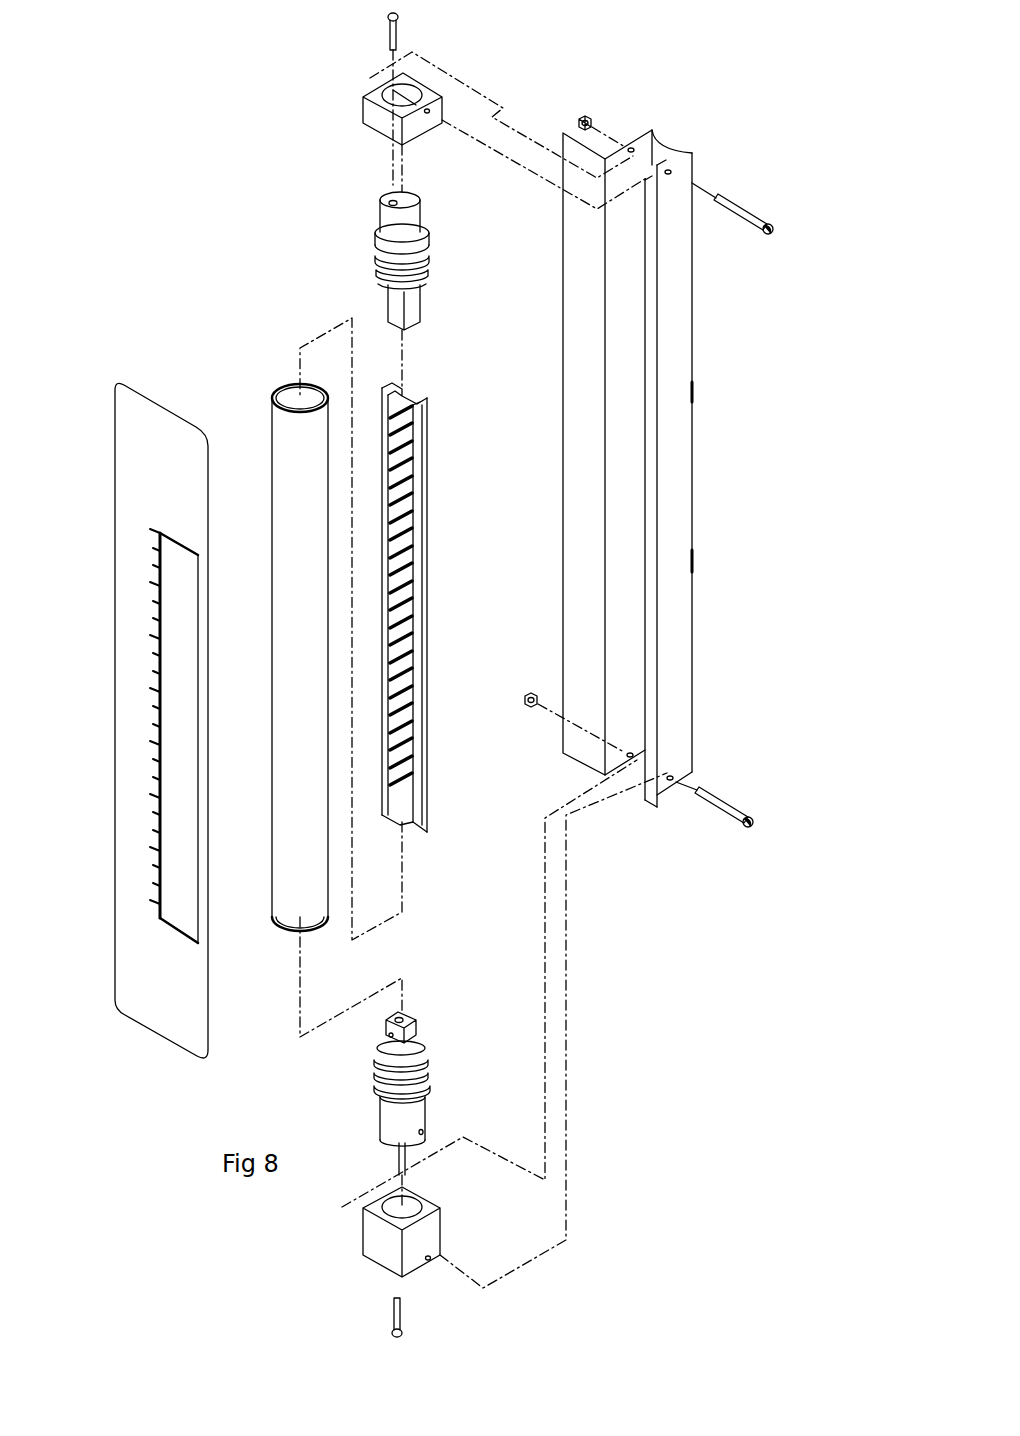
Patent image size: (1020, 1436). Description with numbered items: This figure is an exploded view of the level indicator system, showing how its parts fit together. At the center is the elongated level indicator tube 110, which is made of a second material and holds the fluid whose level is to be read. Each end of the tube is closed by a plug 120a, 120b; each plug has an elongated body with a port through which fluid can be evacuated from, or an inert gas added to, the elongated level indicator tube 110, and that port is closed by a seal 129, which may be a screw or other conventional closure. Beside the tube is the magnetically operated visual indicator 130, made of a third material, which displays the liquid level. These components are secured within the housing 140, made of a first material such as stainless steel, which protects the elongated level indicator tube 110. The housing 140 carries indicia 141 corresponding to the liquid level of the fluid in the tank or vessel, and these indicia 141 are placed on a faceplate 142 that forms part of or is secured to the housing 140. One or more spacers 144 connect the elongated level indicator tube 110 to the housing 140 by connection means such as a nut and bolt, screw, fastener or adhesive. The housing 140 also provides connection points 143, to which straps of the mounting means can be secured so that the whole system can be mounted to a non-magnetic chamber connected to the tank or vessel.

The elongated level indicator tube 110 is at (278, 440).
The plug 120a is at (412, 306).
The plug 120b is at (420, 1115).
The seal 129 is at (395, 38).
The magnetically operated visual indicator 130 is at (412, 668).
The housing 140 is at (677, 303).
The indicia 141 is at (142, 582).
The faceplate 142 is at (126, 472).
The connection points 143 is at (693, 393).
The spacers 144 is at (432, 97).